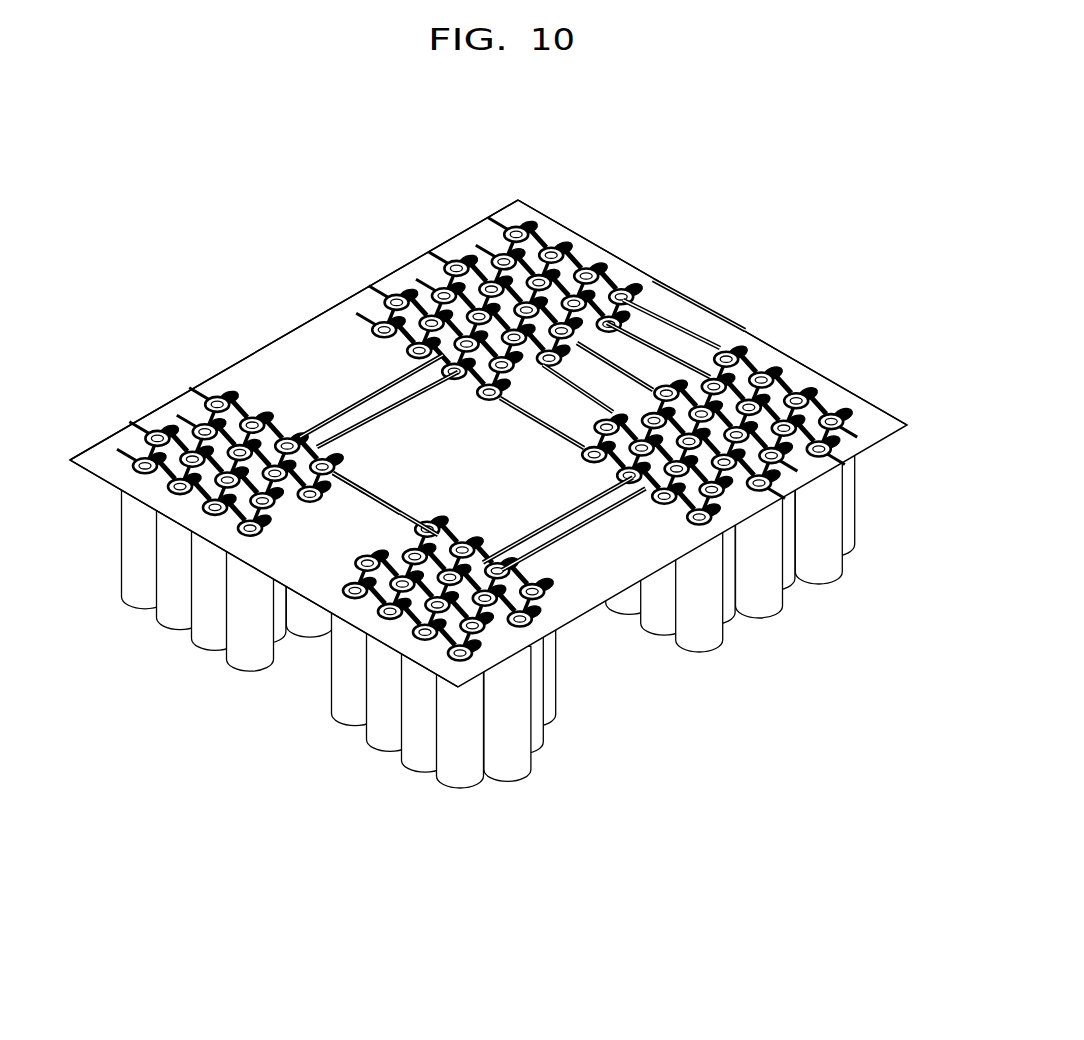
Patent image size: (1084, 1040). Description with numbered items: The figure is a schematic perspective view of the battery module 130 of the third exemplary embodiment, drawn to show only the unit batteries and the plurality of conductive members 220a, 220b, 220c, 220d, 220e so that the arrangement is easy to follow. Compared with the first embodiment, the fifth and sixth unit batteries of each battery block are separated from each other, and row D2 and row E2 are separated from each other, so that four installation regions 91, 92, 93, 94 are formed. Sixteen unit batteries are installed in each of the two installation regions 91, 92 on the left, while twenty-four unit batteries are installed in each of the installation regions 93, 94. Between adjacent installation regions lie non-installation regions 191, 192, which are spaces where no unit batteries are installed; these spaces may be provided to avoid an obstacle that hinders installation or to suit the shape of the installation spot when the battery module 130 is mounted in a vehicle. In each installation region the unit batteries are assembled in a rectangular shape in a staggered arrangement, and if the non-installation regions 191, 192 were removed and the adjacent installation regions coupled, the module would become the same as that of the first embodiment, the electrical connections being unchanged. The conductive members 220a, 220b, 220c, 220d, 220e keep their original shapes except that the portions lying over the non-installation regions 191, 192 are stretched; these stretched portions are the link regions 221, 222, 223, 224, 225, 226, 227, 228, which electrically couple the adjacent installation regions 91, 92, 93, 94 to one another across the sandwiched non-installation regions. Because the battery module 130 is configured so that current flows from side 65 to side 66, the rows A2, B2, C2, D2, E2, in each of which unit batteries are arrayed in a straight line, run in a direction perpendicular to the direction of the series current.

The battery module 130 is at (542, 528).
The installation region 94 is at (461, 213).
The side 65 is at (108, 490).
The side 66 is at (728, 322).
The link region 224 is at (269, 365).
The conductive member 220a is at (103, 448).
The conductive member 220b is at (152, 418).
The conductive member 220c is at (187, 400).
The conductive member 220d is at (295, 338).
The conductive member 220e is at (362, 304).
The link region 225 is at (386, 402).
The link region 227 is at (546, 412).
The link region 228 is at (577, 537).
The link region 226 is at (553, 480).
The link region 221 is at (368, 519).
The link region 222 is at (321, 528).
The link region 223 is at (284, 562).
The installation region 91 is at (216, 676).
The installation region 92 is at (389, 780).
The installation region 93 is at (869, 513).
The non-installation region 191 is at (296, 683).
The non-installation region 192 is at (634, 696).
The row A2 is at (470, 808).
The row B2 is at (494, 779).
The row C2 is at (540, 771).
The row D2 is at (558, 744).
The row E2 is at (718, 667).